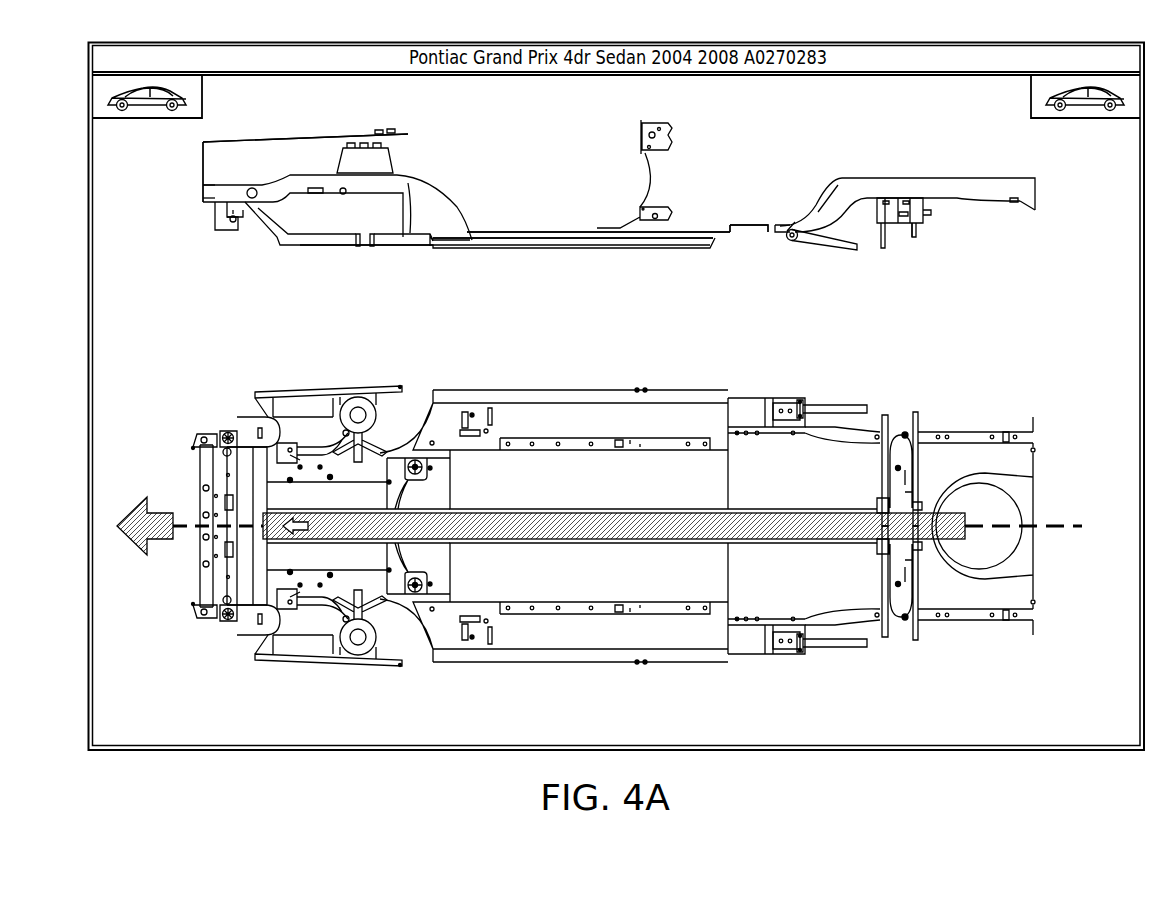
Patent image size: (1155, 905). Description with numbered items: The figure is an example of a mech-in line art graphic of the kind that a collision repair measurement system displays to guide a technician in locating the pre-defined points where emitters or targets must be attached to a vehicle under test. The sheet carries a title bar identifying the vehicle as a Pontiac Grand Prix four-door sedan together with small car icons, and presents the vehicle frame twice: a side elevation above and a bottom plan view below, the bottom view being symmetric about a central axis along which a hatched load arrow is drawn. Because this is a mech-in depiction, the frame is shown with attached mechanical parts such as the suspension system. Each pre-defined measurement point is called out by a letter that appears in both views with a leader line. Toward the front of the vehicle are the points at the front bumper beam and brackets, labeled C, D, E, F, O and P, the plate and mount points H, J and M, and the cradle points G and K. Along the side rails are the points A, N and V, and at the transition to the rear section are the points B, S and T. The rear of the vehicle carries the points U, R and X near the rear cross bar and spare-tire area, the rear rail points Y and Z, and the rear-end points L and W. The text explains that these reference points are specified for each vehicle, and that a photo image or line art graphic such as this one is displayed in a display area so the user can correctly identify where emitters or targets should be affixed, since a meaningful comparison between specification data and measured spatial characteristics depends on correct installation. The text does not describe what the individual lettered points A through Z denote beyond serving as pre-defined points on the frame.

The side rail A is at (477, 250).
The rear rail section B is at (740, 238).
The front bumper bracket C is at (210, 205).
The bracket fastener D is at (233, 223).
The front bumper beam E is at (212, 138).
The bracket bolt F is at (235, 224).
The engine cradle bracket G is at (353, 243).
The radiator support plate H is at (263, 138).
The suspension bearing mount J is at (362, 135).
The cradle bolt K is at (426, 242).
The rear end panel L is at (1037, 190).
The plate fastener M is at (400, 133).
The lower bracket N is at (640, 207).
The bracket hole O is at (202, 193).
The bracket tip P is at (202, 200).
The spare tire well R is at (900, 228).
The rear bracket S is at (777, 240).
The trailing arm rod T is at (800, 241).
The rear suspension bracket U is at (878, 225).
The upper bracket V is at (644, 143).
The rear bumper mount W is at (1036, 212).
The rear cross bar X is at (916, 234).
The rear rail Y is at (988, 203).
The rear rail fastener Z is at (1015, 203).